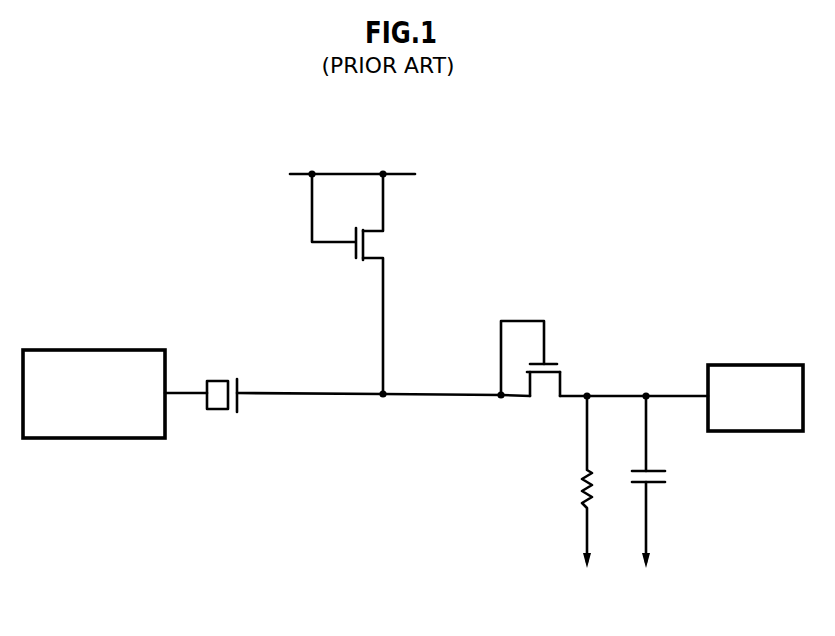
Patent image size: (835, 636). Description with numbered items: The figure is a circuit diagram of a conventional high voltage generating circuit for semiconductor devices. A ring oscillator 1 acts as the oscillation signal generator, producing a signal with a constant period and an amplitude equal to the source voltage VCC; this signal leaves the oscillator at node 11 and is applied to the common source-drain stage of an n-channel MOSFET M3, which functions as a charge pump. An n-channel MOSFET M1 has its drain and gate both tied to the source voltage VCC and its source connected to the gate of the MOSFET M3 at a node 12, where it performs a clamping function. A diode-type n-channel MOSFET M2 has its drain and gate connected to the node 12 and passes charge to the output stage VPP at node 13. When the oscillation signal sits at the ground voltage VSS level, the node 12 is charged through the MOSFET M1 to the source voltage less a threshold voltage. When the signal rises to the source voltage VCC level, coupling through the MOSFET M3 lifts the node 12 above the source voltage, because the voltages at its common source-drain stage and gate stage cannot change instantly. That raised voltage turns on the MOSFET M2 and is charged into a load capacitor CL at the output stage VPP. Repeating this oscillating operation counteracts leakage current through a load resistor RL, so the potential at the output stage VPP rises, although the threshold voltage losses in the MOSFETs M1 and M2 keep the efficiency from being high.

The ring oscillator 1 is at (133, 439).
The oscillator output node 11 is at (188, 392).
The node 12 is at (385, 398).
The output node 13 is at (589, 394).
The n-channel MOSFET M1 is at (366, 246).
The diode-type n-channel MOSFET M2 is at (544, 378).
The n-channel MOSFET M3 is at (229, 411).
The load resistor RL is at (580, 492).
The load capacitor CL is at (652, 486).
The source voltage VCC is at (352, 162).
The output stage VPP is at (755, 398).
The ground voltage VSS is at (628, 596).